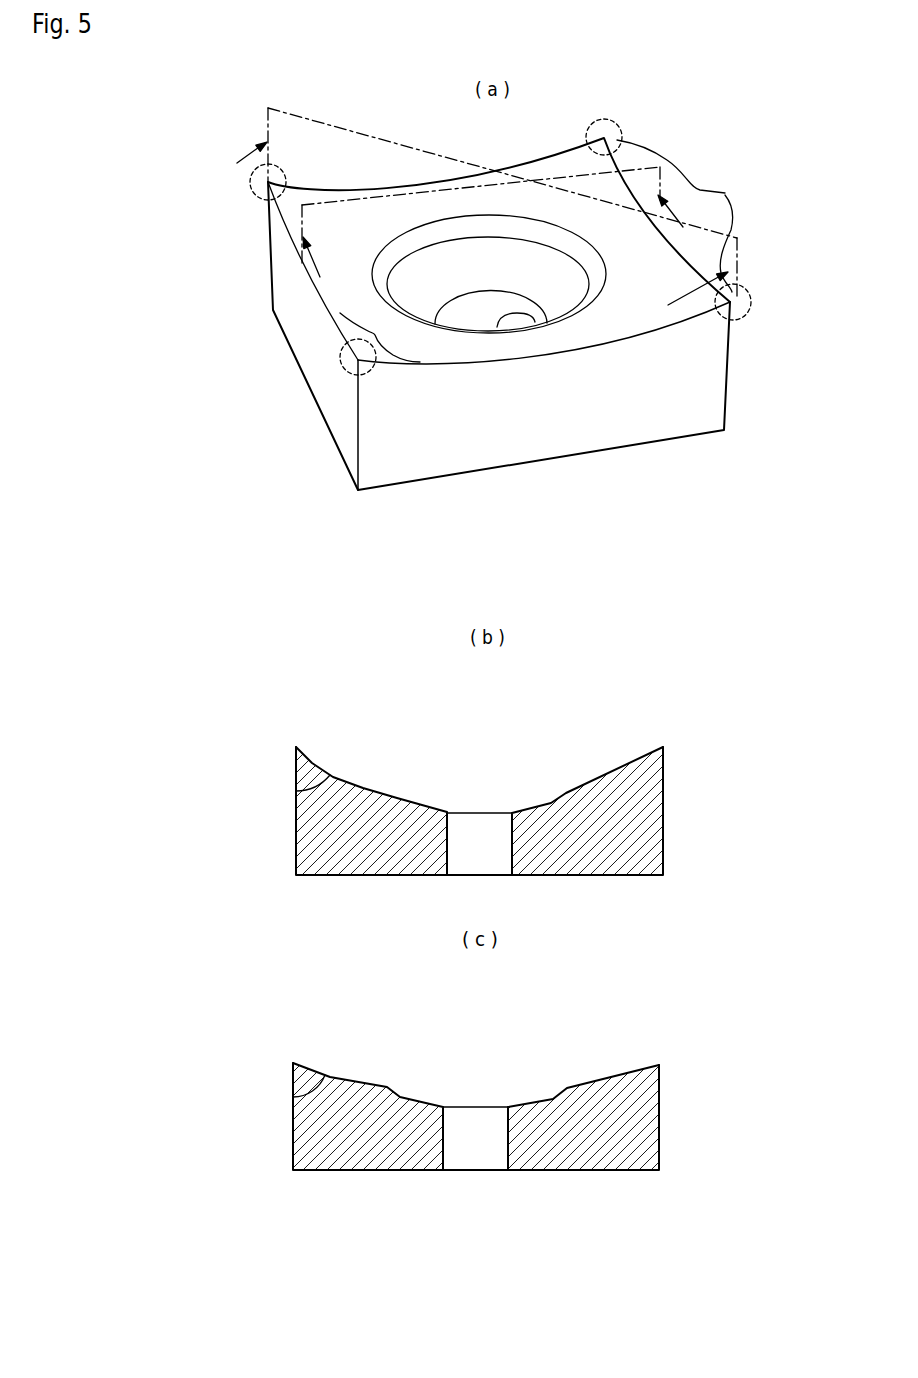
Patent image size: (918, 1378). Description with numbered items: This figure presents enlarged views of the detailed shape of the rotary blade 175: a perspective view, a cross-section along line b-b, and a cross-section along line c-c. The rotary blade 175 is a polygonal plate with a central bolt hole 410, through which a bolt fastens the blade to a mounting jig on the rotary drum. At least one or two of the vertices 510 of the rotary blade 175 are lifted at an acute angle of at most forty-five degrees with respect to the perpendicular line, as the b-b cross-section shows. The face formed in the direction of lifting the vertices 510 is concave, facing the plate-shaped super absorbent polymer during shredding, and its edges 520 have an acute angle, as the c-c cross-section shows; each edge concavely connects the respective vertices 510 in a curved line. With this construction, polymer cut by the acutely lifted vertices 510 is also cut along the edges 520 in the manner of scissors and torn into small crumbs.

The rotary blade 175 is at (680, 482).
The bolt hole 410 is at (535, 322).
The vertices 510 is at (340, 357).
The edges 520 is at (375, 335).